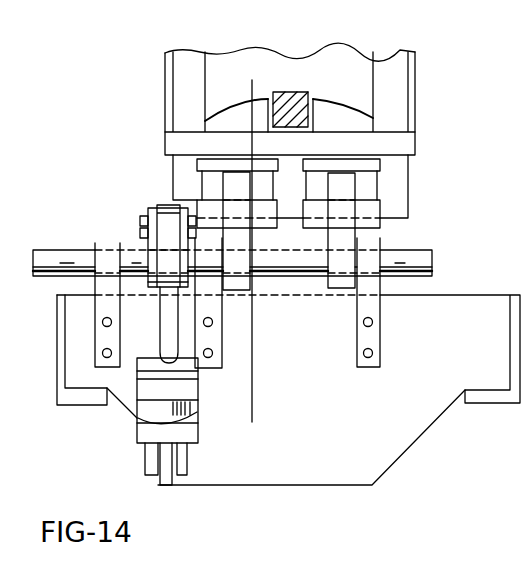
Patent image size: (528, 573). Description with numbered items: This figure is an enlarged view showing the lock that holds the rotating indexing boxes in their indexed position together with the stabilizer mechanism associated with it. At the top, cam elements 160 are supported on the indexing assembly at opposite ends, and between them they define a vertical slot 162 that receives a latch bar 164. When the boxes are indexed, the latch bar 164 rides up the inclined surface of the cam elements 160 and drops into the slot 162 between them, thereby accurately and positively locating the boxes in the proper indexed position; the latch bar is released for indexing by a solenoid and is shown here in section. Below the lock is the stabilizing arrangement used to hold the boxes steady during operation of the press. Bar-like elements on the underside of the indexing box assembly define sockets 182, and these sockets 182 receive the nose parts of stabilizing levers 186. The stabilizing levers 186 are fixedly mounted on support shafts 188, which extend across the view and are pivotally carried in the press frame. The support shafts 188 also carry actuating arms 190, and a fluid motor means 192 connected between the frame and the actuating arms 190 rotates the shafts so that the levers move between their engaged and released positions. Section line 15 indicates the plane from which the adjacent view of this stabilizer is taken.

The section line 15- 15 is at (241, 96).
The cam elements 160 is at (257, 102).
The vertical slot 162 is at (308, 115).
The latch bar 164 is at (293, 103).
The sockets 182 is at (366, 183).
The stabilizing levers 186 is at (238, 190).
The support shafts 188 is at (427, 267).
The actuating arms 190 is at (150, 243).
The fluid motor means 192 is at (155, 413).